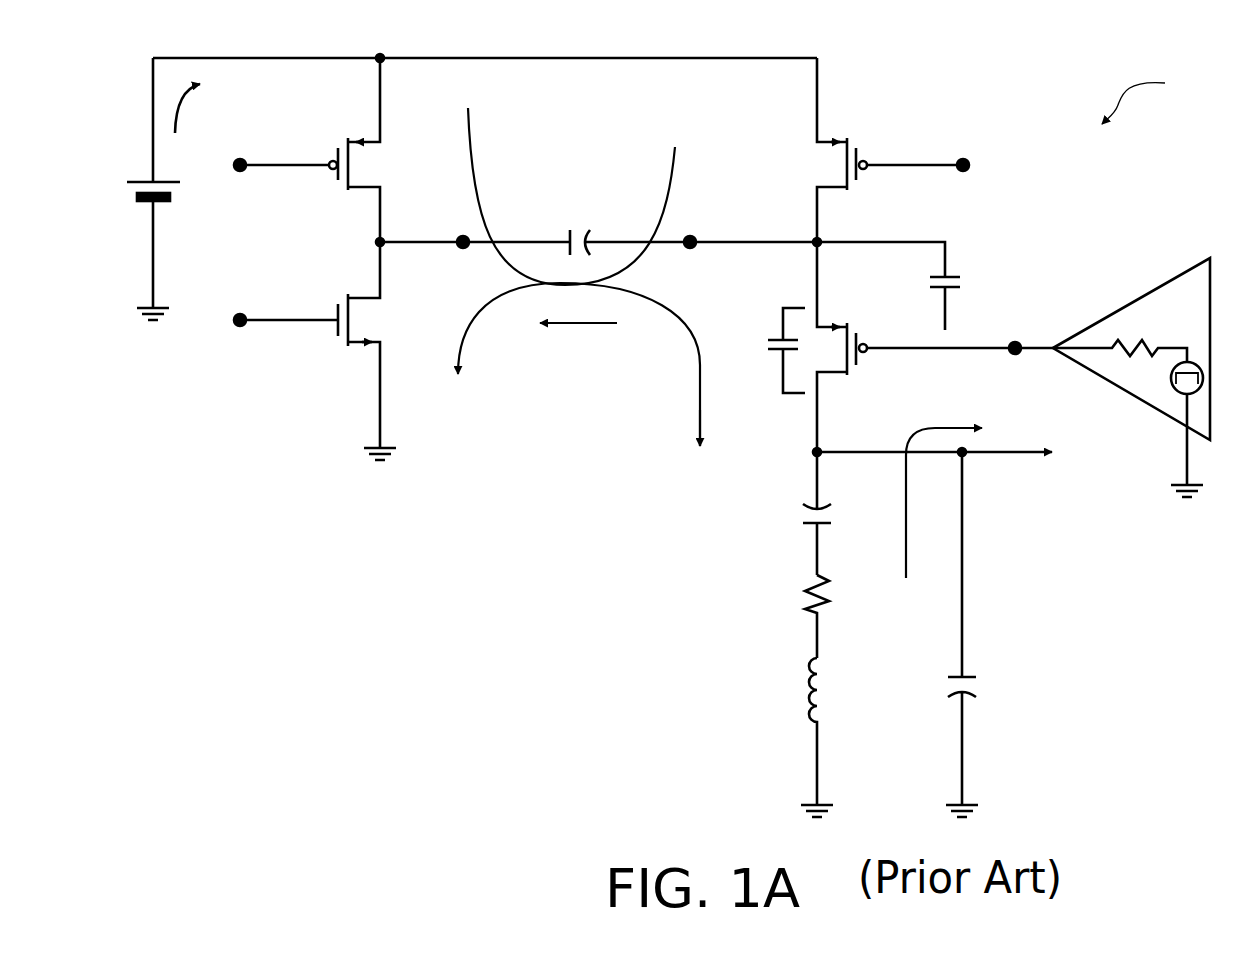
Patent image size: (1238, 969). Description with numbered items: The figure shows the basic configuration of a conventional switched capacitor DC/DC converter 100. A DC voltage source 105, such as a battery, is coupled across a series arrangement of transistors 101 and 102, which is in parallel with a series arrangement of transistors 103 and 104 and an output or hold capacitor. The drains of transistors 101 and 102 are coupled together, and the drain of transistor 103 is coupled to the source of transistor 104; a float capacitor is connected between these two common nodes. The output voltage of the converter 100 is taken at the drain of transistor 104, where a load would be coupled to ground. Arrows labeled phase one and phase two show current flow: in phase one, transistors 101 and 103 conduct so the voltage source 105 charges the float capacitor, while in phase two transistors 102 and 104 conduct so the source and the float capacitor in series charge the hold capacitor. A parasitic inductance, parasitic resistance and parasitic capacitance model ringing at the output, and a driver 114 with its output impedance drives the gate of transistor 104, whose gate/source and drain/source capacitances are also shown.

The switched capacitor DC/DC converter 100 is at (650, 428).
The transistor 101 is at (303, 351).
The transistor 102 is at (293, 150).
The transistor 103 is at (898, 150).
The transistor 104 is at (935, 347).
The DC voltage source 105 is at (135, 189).
The driver 114 is at (1118, 305).